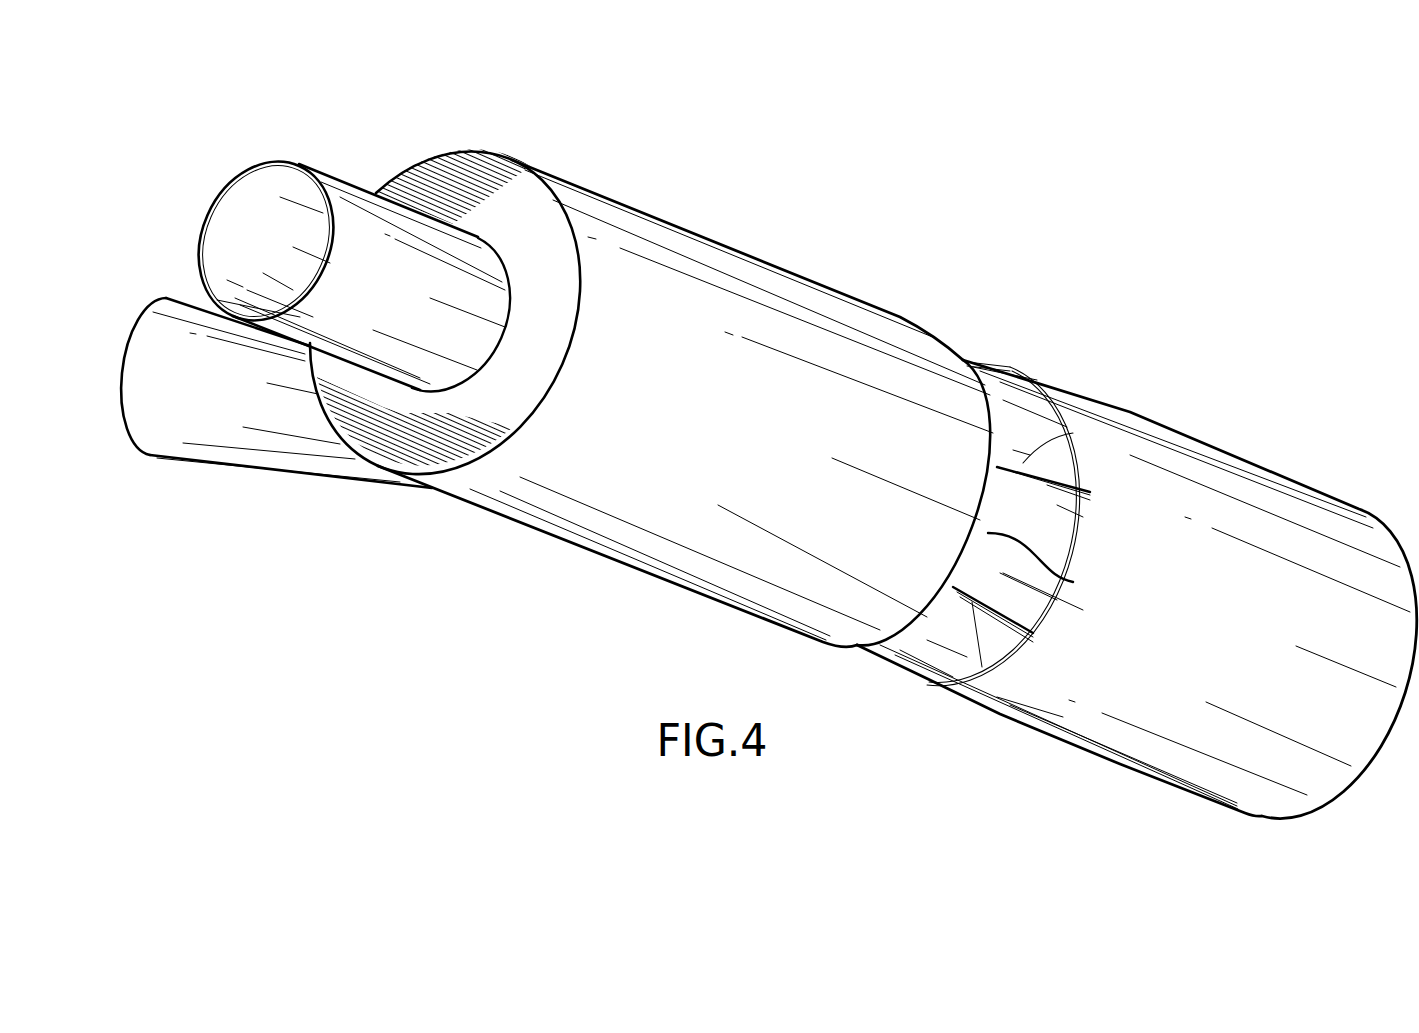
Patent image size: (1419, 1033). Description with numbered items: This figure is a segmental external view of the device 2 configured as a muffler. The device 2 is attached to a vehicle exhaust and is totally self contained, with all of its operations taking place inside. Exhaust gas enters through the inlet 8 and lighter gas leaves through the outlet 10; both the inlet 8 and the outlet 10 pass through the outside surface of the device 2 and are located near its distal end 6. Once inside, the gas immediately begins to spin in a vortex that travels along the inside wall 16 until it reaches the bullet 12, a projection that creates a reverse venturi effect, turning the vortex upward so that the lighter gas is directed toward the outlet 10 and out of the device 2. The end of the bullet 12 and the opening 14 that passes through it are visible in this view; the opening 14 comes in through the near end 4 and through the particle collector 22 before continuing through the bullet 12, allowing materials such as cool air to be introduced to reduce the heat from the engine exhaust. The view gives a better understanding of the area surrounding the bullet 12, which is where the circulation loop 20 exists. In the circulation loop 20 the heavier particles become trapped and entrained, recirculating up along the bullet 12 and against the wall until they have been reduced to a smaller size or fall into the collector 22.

The device 2 is at (630, 623).
The near end 4 is at (1365, 511).
The distal end 6 is at (461, 157).
The inlet 8 is at (265, 457).
The outlet 10 is at (248, 207).
The bullet 12 is at (998, 589).
The opening 14 is at (1073, 582).
The inside wall 16 is at (1013, 388).
The circulation loop 20 is at (1068, 459).
The particle collector 22 is at (1158, 757).